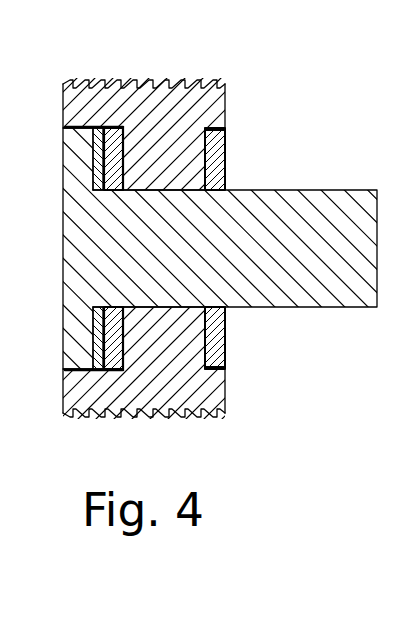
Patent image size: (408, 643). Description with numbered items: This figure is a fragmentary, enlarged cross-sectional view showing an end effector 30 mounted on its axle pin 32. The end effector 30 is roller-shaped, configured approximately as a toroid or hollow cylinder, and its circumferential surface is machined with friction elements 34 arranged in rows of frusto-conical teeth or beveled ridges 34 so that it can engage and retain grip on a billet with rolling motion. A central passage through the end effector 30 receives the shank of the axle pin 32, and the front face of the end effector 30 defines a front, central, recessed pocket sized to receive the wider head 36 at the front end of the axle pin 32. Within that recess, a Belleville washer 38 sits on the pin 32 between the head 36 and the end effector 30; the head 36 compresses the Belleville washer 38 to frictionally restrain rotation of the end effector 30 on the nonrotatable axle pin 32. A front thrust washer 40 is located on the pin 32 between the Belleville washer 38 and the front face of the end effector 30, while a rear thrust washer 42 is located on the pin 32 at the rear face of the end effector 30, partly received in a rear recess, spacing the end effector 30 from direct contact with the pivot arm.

The end effector 30 is at (225, 105).
The axle pin 32 is at (285, 302).
The friction elements 34 is at (173, 80).
The head 36 is at (68, 178).
The Belleville washer 38 is at (102, 136).
The front thrust washer 40 is at (113, 135).
The rear thrust washer 42 is at (225, 138).